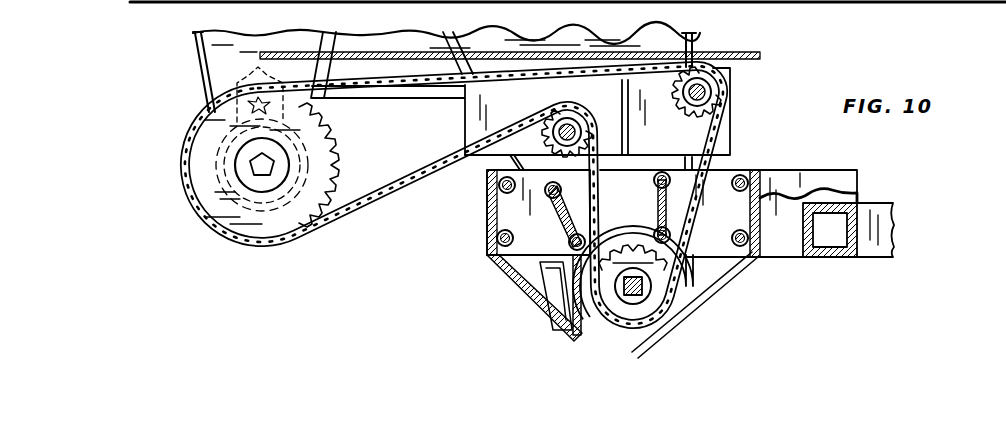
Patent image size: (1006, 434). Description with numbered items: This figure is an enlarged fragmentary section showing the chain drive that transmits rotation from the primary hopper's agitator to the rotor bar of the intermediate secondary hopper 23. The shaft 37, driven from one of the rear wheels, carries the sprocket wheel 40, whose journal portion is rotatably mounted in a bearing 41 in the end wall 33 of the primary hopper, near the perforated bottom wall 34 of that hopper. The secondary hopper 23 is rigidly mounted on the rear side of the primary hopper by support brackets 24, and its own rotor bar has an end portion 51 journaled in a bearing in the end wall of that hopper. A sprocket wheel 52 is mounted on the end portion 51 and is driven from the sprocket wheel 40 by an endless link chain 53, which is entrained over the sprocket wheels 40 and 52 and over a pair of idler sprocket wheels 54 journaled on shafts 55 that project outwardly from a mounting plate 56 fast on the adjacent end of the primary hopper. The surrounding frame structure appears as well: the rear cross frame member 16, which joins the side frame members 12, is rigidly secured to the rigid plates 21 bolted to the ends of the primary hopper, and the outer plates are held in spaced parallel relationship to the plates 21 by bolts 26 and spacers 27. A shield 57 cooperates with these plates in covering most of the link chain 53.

The side frame member 12 is at (895, 218).
The rear cross frame member 16 is at (843, 258).
The rigid plate 21 is at (806, 195).
The intermediate secondary hopper 23 is at (188, 43).
The support bracket 24 is at (432, 99).
The bolt 26 is at (569, 243).
The spacer 27 is at (489, 236).
The end wall 33 is at (587, 43).
The perforated bottom wall 34 is at (640, 347).
The shaft 37 is at (630, 298).
The sprocket wheel 40 is at (619, 304).
The bearing 41 is at (667, 313).
The end portion 51 is at (272, 166).
The sprocket wheel 52 is at (333, 143).
The endless link chain 53 is at (384, 200).
The idler sprocket wheel 54 is at (583, 113).
The shaft 55 is at (560, 128).
The mounting plate 56 is at (733, 141).
The shield 57 is at (387, 52).